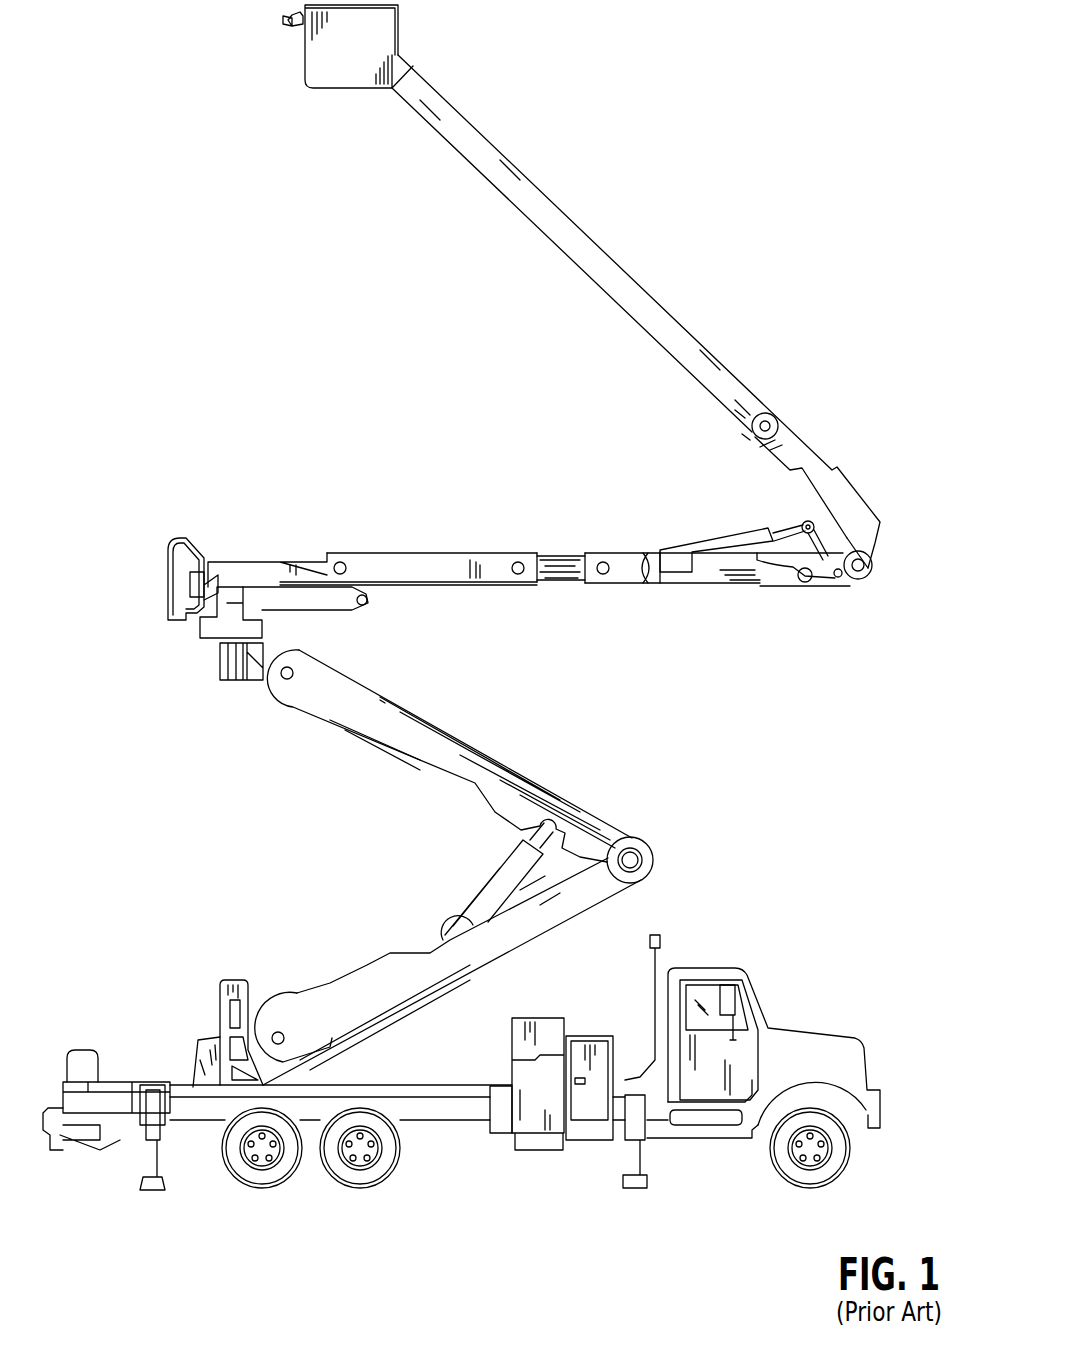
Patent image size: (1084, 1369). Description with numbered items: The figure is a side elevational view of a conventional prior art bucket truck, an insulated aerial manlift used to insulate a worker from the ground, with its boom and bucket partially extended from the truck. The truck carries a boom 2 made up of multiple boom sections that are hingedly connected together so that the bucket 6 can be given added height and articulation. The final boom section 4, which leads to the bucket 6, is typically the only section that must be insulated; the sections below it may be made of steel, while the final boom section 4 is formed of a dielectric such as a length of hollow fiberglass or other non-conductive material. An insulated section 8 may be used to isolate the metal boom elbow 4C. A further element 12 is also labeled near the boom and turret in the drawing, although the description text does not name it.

The boom 2 is at (683, 856).
The final boom section 4 is at (567, 215).
The metal boom elbow 4C is at (873, 498).
The bucket 6 is at (305, 71).
The insulated section 8 is at (568, 553).
The jib / attachment bracket 12 is at (169, 555).